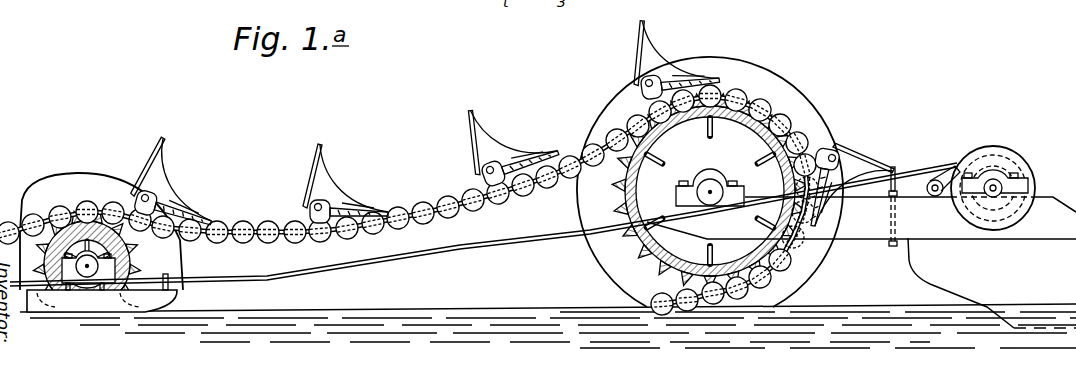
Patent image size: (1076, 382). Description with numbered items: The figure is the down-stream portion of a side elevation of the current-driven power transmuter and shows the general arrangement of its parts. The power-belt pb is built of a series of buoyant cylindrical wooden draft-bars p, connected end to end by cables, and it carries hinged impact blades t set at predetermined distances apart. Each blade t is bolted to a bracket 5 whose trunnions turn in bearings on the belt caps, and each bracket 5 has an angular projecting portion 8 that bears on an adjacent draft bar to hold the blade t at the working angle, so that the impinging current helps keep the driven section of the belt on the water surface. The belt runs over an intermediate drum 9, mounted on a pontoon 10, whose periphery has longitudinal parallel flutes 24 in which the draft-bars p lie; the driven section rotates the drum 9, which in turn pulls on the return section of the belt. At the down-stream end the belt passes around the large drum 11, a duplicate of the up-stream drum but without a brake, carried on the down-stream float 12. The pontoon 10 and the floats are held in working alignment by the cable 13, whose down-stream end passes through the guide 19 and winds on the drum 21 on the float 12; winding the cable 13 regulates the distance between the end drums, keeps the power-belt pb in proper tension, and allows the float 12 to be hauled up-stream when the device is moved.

The bracket 5 is at (182, 203).
The angular projecting portion 8 is at (164, 141).
The intermediate drum 9 is at (79, 181).
The pontoon 10 is at (180, 300).
The drum 11 is at (808, 261).
The down-stream float 12 is at (912, 255).
The cable 13 is at (300, 272).
The guide 19 is at (899, 166).
The drum 21 is at (1000, 153).
The flute 24 is at (624, 192).
The impact blade t is at (213, 220).
The draft-bar p is at (250, 222).
The power-belt pb is at (469, 230).